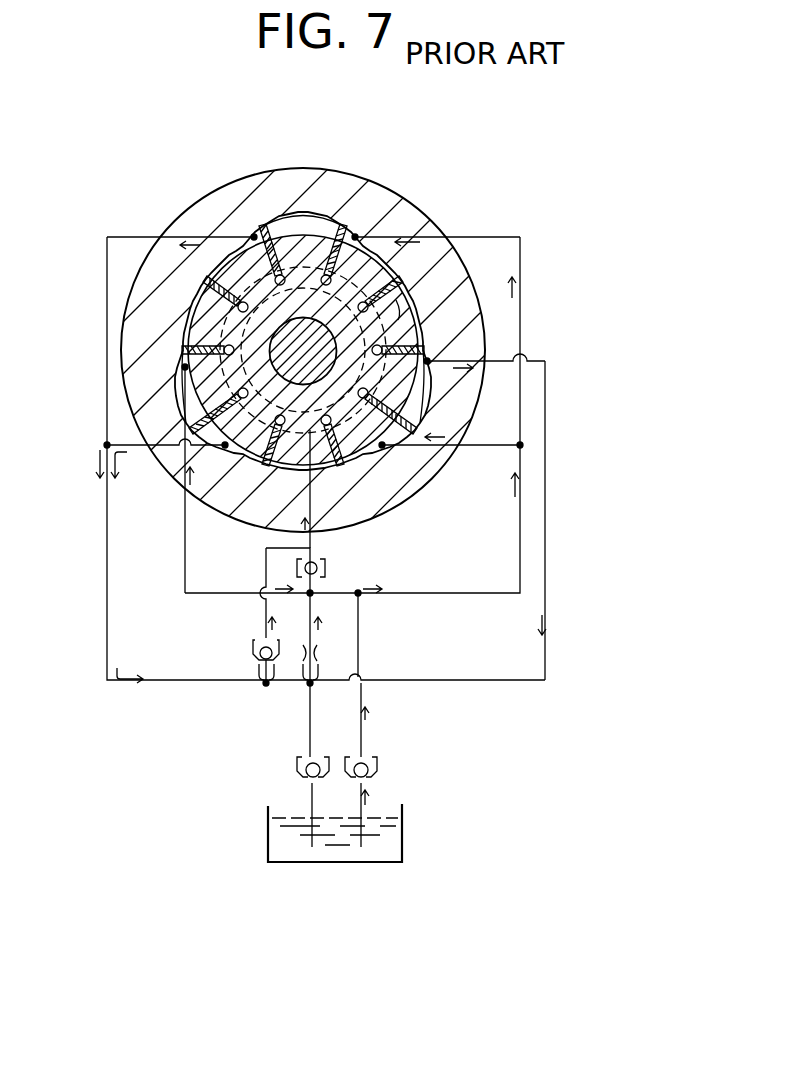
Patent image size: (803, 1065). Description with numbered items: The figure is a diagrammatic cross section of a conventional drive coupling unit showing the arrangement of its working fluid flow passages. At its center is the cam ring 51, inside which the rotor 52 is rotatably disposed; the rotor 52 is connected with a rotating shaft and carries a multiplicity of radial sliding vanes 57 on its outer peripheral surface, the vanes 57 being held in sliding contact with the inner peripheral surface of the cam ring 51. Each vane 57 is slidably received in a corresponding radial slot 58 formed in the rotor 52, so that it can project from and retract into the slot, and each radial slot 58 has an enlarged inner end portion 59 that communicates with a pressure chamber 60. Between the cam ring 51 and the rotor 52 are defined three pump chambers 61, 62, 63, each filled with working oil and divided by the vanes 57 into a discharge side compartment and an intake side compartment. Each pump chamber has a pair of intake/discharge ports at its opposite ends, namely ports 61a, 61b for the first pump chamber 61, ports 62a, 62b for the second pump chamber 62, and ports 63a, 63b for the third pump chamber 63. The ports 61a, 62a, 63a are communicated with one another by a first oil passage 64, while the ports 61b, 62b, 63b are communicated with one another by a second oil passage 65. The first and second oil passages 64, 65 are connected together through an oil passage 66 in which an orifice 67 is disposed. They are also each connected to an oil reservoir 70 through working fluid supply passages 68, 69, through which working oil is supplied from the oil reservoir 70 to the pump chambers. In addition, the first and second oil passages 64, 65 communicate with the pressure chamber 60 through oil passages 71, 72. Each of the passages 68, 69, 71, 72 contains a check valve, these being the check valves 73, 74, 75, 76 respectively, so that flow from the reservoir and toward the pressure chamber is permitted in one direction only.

The cam ring 51 is at (480, 233).
The rotor 52 is at (222, 266).
The radial sliding vanes 57 is at (262, 228).
The radial slots 58 is at (447, 257).
The enlarged inner end portion 59 is at (305, 245).
The pressure chamber 60 is at (395, 314).
The pump chamber 61 is at (276, 220).
The intake/discharge port 61a is at (254, 237).
The intake/discharge port 61b is at (363, 235).
The pump chamber 62 is at (177, 387).
The intake/discharge port 62a is at (222, 488).
The intake/discharge port 62b is at (190, 340).
The pump chamber 63 is at (427, 382).
The intake/discharge port 63a is at (430, 336).
The intake/discharge port 63b is at (405, 455).
The first oil passage 64 is at (107, 588).
The second oil passage 65 is at (548, 553).
The oil passage 66 is at (313, 608).
The orifice 67 is at (320, 653).
The oil passage 68 is at (312, 717).
The oil passage 69 is at (362, 735).
The oil reservoir 70 is at (403, 838).
The oil passage 71 is at (264, 563).
The oil passage 72 is at (310, 507).
The check valve 73 is at (297, 767).
The check valve 74 is at (377, 765).
The check valve 75 is at (252, 646).
The check valve 76 is at (327, 565).